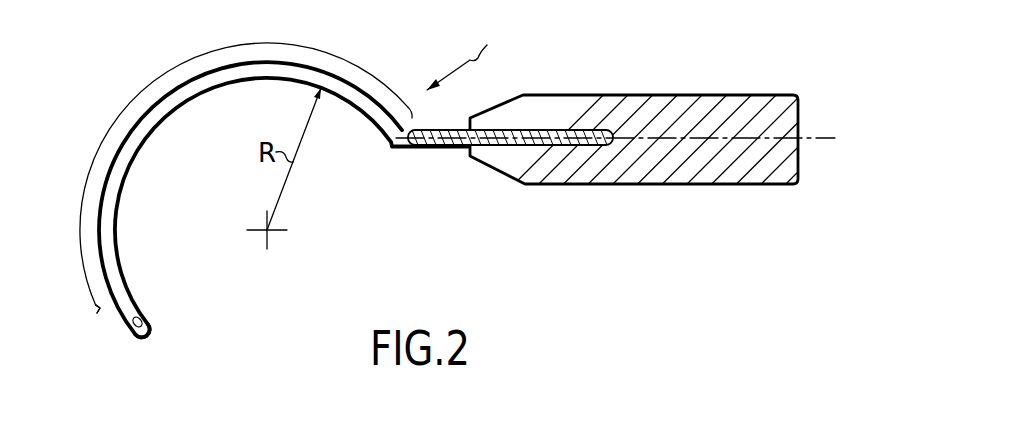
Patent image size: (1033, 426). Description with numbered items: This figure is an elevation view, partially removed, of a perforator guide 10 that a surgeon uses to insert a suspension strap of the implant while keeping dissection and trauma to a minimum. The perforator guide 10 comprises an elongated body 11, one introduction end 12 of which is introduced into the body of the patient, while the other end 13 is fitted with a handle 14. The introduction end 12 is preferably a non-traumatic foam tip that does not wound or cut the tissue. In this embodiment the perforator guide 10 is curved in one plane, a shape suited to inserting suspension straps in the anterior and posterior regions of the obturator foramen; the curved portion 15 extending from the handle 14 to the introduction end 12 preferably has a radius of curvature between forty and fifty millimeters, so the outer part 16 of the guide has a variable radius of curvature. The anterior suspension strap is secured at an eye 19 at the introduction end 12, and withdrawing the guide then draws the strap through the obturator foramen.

The perforator guide 10 is at (465, 54).
The elongated body 11 is at (370, 120).
The introduction end 12 is at (144, 338).
The other end 13 is at (573, 130).
The handle 14 is at (718, 102).
The curved portion 15 is at (192, 57).
The outer part 16 is at (122, 343).
The eye 19 is at (143, 316).